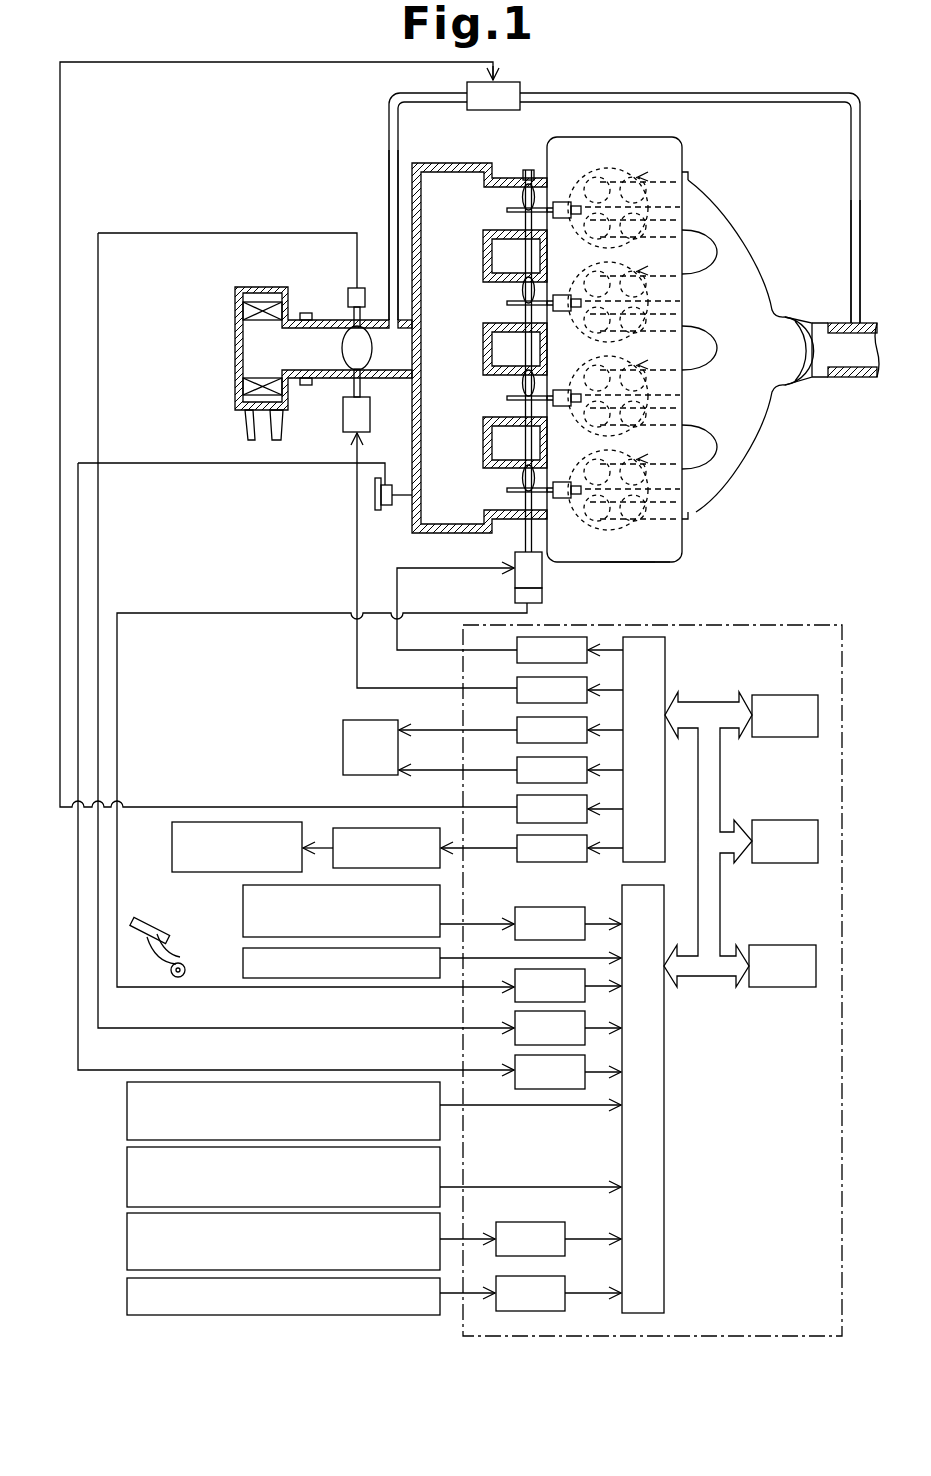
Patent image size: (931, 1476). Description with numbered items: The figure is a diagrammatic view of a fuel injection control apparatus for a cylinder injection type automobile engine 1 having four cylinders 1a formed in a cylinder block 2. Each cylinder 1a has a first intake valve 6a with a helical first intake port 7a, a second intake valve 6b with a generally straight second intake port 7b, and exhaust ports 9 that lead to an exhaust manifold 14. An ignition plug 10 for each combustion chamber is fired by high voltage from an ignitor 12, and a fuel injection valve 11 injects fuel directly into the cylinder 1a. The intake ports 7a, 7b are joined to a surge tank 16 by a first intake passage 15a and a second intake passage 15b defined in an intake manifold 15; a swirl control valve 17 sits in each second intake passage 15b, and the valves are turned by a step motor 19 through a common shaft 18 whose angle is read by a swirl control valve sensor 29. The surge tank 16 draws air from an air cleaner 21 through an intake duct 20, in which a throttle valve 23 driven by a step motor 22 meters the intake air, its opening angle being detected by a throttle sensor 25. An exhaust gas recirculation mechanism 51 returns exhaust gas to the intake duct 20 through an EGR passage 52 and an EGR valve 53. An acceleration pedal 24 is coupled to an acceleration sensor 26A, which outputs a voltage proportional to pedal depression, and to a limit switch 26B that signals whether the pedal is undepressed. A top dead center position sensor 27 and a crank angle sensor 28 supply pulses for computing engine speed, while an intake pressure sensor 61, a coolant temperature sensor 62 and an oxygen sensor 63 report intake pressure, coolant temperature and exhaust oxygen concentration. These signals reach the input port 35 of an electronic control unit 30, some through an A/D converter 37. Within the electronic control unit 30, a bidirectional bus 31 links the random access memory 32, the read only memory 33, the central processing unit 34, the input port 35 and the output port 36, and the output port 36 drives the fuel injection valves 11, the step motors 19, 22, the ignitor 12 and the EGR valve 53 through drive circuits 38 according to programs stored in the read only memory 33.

The engine 1 is at (686, 138).
The cylinder 1a is at (666, 180).
The cylinder block 2 is at (655, 562).
The first intake valve 6a is at (600, 402).
The second intake valve 6b is at (647, 299).
The first intake port 7a is at (597, 571).
The second intake port 7b is at (598, 150).
The exhaust port 9 is at (680, 210).
The ignition plug 10 is at (172, 848).
The fuel injection valve 11 is at (558, 200).
The ignitor 12 is at (410, 828).
The exhaust manifold 14 is at (772, 402).
The intake manifold 15 is at (492, 176).
The first intake passage 15a is at (507, 213).
The second intake passage 15b is at (522, 198).
The surge tank 16 is at (389, 193).
The swirl control valve 17 is at (527, 170).
The common shaft 18 is at (492, 346).
The step motor 19 is at (515, 577).
The intake duct 20 is at (322, 318).
The air cleaner 21 is at (235, 389).
The step motor 22 is at (370, 418).
The throttle valve 23 is at (372, 348).
The acceleration pedal 24 is at (142, 932).
The throttle sensor 25 is at (349, 289).
The acceleration sensor 26A is at (243, 914).
The limit switch 26B is at (243, 965).
The top dead center position sensor 27 is at (127, 1110).
The crank angle sensor 28 is at (127, 1175).
The swirl control valve sensor 29 is at (542, 596).
The electronic control unit 30 is at (767, 618).
The bidirectional bus 31 is at (705, 703).
The random access memory 32 is at (790, 695).
The read only memory 33 is at (790, 820).
The central processing unit 34 is at (795, 945).
The input port 35 is at (666, 1104).
The output port 36 is at (667, 644).
The A/D converter 37 is at (515, 908).
The drive circuit 38 is at (517, 650).
The exhaust gas recirculation mechanism 51 is at (627, 86).
The EGR passage 52 is at (782, 93).
The EGR valve 53 is at (520, 84).
The intake pressure sensor 61 is at (386, 510).
The coolant temperature sensor 62 is at (127, 1242).
The oxygen sensor 63 is at (127, 1293).